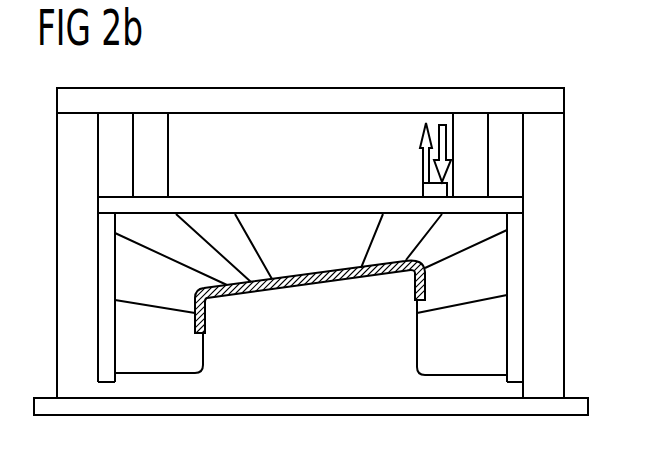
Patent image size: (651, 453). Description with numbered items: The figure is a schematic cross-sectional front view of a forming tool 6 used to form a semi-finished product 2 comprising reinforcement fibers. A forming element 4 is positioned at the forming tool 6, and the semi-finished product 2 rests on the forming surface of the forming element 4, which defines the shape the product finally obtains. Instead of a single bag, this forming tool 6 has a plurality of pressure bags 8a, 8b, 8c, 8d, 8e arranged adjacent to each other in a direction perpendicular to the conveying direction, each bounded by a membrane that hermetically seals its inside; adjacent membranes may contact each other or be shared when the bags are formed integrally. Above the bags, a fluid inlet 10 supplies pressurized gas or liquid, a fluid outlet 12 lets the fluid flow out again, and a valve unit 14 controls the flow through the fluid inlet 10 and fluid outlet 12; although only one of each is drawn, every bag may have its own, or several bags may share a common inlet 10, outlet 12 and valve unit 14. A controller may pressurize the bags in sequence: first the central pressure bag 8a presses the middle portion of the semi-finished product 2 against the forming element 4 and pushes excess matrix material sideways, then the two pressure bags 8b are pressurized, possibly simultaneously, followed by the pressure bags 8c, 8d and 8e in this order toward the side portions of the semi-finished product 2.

The forming tool 6 is at (540, 67).
The fluid inlet 10 is at (446, 143).
The fluid outlet 12 is at (421, 153).
The valve unit 14 is at (422, 190).
The semi-finished product 2 is at (337, 282).
The forming element 4 is at (292, 346).
The central pressure bag 8a is at (317, 251).
The pressure bag 8b is at (241, 251).
The pressure bag 8c is at (193, 256).
The pressure bag 8d is at (173, 294).
The pressure bag 8e is at (162, 347).